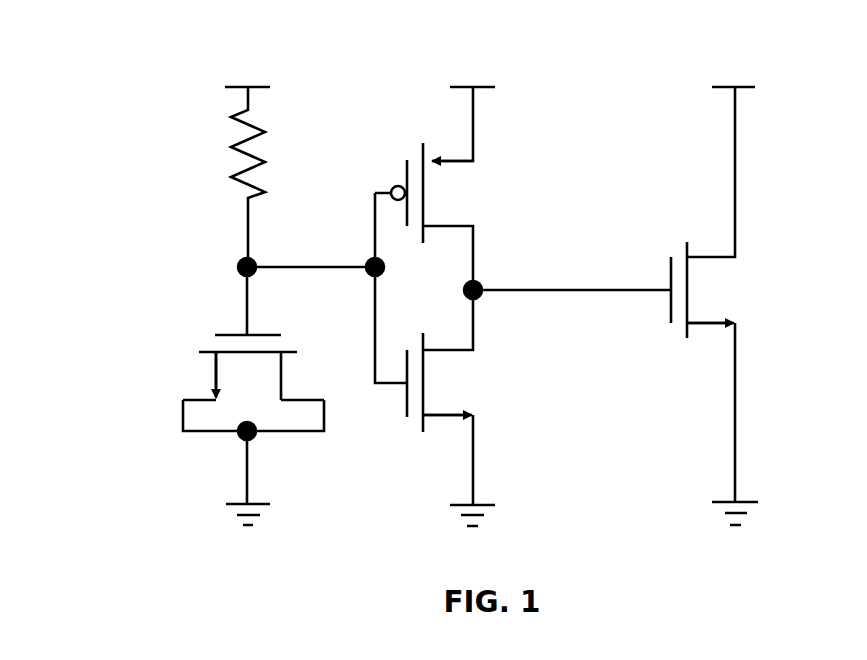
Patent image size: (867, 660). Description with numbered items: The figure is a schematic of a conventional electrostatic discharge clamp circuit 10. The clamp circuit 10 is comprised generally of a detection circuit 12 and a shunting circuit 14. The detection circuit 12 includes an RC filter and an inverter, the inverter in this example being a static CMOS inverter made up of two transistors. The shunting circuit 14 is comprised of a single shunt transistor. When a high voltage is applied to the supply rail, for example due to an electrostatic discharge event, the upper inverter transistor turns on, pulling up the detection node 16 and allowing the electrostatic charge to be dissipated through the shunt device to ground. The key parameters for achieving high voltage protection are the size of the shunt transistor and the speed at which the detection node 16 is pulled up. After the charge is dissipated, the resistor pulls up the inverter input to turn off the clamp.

The electrostatic discharge clamp circuit 10 is at (122, 104).
The detection circuit 12 is at (345, 95).
The shunting circuit 14 is at (690, 158).
The detection node 16 is at (482, 282).